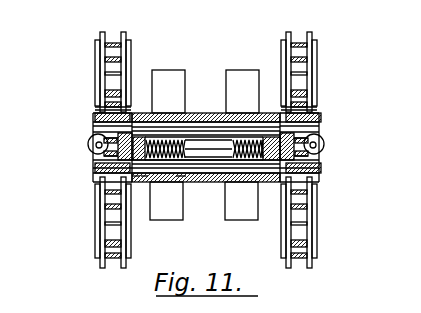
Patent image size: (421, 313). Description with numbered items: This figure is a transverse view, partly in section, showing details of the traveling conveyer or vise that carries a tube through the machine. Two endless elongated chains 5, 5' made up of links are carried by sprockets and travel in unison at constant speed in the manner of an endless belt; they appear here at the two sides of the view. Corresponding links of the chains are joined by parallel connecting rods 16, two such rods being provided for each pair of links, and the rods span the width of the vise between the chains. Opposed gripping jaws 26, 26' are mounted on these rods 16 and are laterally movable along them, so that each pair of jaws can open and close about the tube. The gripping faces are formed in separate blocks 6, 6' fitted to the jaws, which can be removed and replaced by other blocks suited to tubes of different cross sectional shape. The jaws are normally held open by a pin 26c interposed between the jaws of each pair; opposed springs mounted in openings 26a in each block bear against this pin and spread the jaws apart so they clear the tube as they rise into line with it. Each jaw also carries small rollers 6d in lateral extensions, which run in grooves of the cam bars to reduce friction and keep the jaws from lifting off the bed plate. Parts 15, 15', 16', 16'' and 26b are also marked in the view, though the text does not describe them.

The endless elongated chain 5 is at (103, 150).
The endless elongated chain 5' is at (312, 148).
The gripping block 6 is at (173, 79).
The gripping block 6' is at (242, 78).
The roller 6d is at (333, 166).
The guide 15 is at (94, 107).
The guide 15' is at (311, 107).
The connecting rod 16 is at (206, 151).
The bearing 16' is at (75, 144).
The bearing 16'' is at (322, 142).
The gripping jaw 26 is at (204, 201).
The opening 26a is at (262, 236).
The housing part 26b is at (143, 186).
The pin 26c is at (182, 184).
The gripping jaw 26' is at (127, 238).